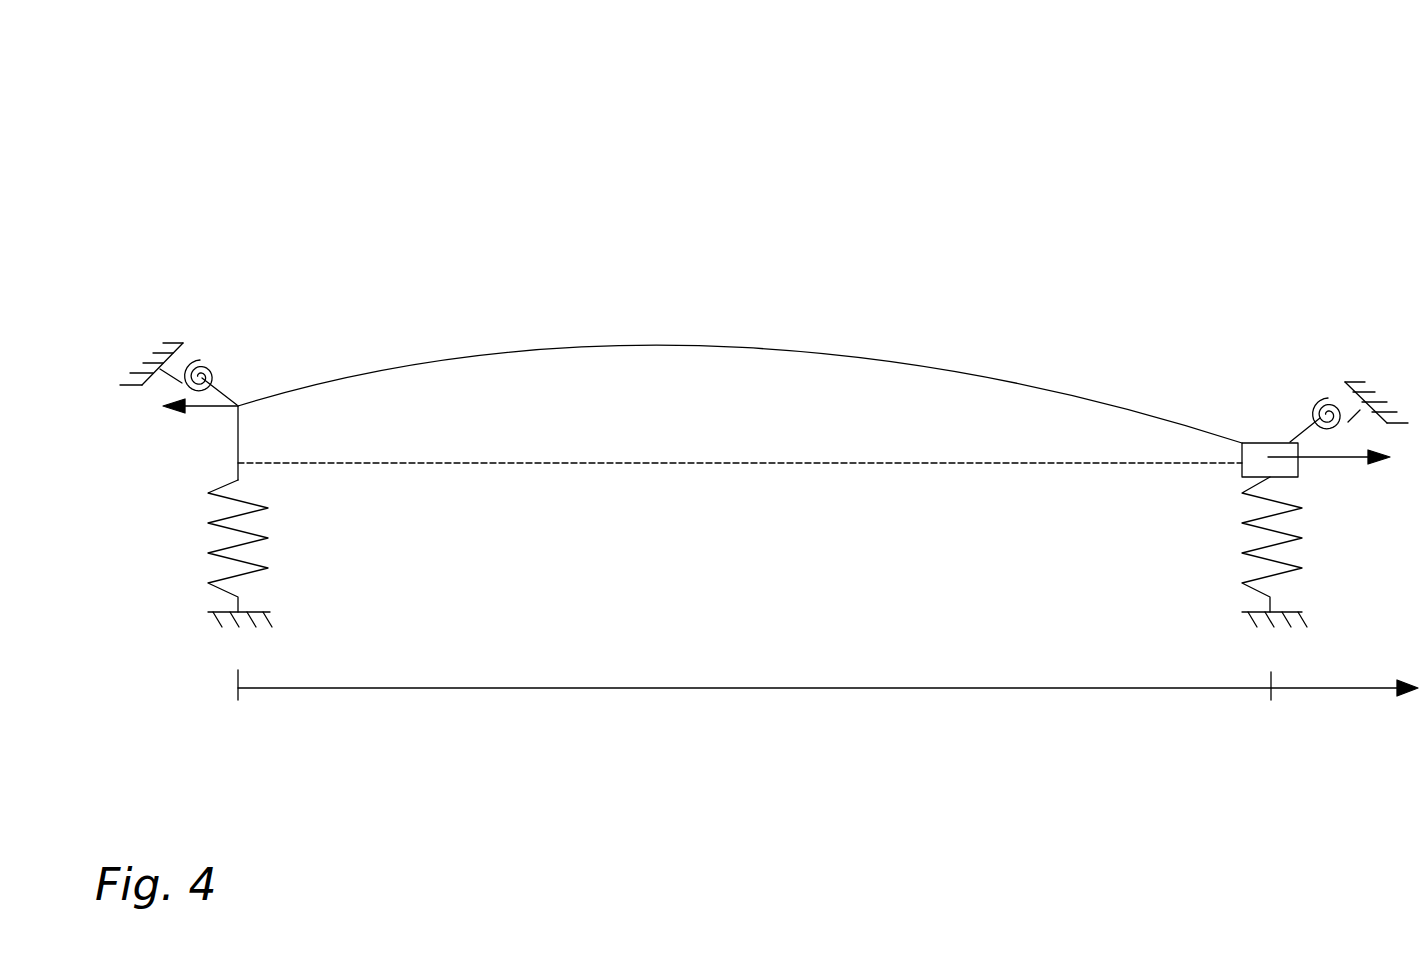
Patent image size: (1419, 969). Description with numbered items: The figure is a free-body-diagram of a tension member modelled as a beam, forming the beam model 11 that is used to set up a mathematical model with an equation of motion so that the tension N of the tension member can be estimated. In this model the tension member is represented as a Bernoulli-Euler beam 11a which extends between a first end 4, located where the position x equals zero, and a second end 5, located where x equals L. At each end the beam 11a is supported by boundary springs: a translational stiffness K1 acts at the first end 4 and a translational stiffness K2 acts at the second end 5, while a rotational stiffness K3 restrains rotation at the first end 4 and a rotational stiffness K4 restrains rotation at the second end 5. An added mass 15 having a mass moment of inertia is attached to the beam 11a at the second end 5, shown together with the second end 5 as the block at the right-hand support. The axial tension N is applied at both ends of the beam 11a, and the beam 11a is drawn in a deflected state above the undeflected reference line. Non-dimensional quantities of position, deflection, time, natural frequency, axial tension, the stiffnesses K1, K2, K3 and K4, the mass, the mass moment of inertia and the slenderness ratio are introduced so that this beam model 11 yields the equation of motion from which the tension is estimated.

The beam model 11 is at (196, 112).
The beam 11a is at (740, 314).
The first end of tension member 4 is at (250, 406).
The second end of tension member 5 is at (1279, 440).
The added mass 15 is at (1279, 440).
The translational stiffness K1 is at (271, 553).
The translational stiffness K2 is at (1296, 552).
The rotational stiffness K3 is at (181, 366).
The rotational stiffness K4 is at (1349, 404).